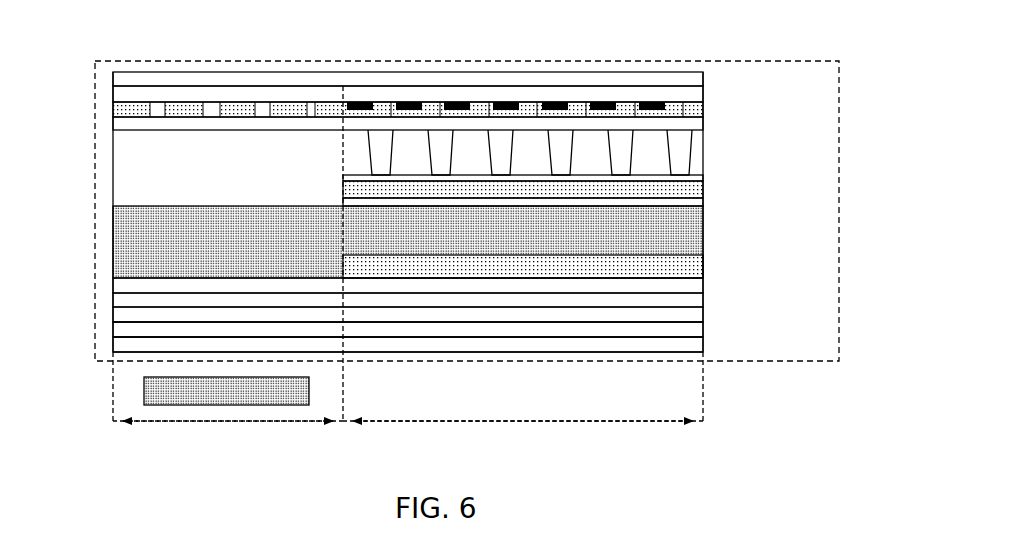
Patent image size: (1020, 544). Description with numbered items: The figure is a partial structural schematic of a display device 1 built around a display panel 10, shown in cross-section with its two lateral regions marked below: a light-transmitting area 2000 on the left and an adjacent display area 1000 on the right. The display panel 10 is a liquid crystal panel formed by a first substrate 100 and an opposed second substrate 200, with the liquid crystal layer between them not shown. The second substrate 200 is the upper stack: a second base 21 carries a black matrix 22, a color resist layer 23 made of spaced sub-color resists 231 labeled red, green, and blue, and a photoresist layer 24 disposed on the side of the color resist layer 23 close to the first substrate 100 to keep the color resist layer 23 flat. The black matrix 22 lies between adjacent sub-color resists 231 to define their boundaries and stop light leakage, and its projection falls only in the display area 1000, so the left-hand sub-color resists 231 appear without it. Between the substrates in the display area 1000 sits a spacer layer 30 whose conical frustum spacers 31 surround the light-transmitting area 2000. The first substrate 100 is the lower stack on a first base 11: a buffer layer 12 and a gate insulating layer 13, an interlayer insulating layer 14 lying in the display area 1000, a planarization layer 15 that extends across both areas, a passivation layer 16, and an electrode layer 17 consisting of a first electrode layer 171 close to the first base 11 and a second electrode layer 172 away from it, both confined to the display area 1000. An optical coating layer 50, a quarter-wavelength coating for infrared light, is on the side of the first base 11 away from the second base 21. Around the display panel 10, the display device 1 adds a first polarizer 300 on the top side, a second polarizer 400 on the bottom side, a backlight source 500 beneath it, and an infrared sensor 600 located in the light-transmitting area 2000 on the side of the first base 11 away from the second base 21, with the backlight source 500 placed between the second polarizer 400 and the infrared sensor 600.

The display device 1 is at (92, 35).
The display panel 10 is at (842, 331).
The first polarizer 300 is at (113, 76).
The second substrate 200 is at (478, 88).
The second base 21 is at (703, 92).
The black matrix 22 is at (652, 103).
The color resist layer 23 is at (453, 111).
The sub-color resist 231 is at (703, 108).
The photoresist layer 24 is at (703, 124).
The spacer layer 30 is at (581, 152).
The spacer 31 is at (692, 150).
The first substrate 100 is at (476, 248).
The electrode layer 17 is at (569, 192).
The second electrode layer 172 is at (703, 177).
The first electrode layer 171 is at (703, 203).
The passivation layer 16 is at (703, 190).
The planarization layer 15 is at (703, 234).
The interlayer insulating layer 14 is at (703, 267).
The gate insulating layer 13 is at (703, 285).
The buffer layer 12 is at (703, 300).
The first base 11 is at (437, 317).
The optical coating layer 50 is at (703, 330).
The second polarizer 400 is at (113, 331).
The backlight source 500 is at (113, 343).
The infrared sensor 600 is at (144, 389).
The light-transmitting area 2000 is at (228, 390).
The display area 1000 is at (523, 390).